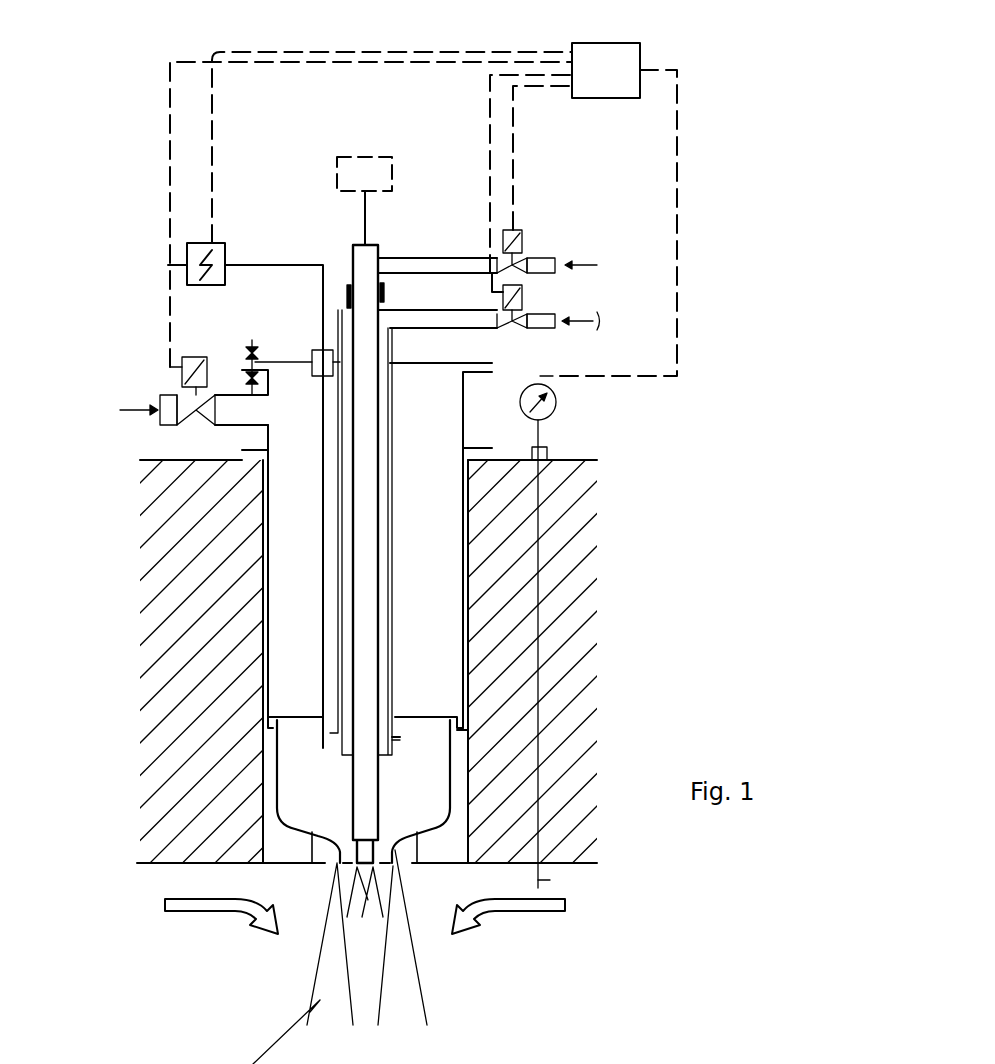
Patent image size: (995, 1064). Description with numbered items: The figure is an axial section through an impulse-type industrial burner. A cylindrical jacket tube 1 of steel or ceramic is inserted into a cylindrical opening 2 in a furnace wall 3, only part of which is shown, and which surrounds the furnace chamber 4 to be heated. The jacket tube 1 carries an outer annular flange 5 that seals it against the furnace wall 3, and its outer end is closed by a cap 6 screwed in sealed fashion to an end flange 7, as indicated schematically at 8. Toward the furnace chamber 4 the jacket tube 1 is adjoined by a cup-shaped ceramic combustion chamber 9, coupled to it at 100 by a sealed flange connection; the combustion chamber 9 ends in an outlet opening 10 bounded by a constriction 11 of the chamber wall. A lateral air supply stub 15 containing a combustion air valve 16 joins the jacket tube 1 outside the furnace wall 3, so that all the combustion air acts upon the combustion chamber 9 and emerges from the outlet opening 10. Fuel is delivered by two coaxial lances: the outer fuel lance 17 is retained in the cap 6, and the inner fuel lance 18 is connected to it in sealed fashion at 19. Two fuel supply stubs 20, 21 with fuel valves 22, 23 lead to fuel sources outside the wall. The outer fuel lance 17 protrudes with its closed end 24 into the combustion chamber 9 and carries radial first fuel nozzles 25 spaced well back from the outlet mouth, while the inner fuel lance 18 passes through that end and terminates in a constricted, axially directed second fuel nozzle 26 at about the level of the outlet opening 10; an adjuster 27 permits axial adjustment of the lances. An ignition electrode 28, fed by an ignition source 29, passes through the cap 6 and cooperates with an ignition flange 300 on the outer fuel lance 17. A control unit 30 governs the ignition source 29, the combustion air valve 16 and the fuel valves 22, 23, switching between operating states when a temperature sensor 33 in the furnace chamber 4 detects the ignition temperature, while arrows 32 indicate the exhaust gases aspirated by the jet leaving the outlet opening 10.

The jacket tube 1 is at (272, 617).
The cylindrical opening 2 is at (267, 843).
The furnace wall 3 is at (575, 650).
The furnace chamber 4 is at (485, 1004).
The outer annular flange 5 is at (477, 448).
The cap 6 is at (422, 365).
The end flange 7 is at (480, 377).
The screw connection 8 is at (248, 338).
The combustion chamber 9 is at (290, 817).
The outlet opening 10 is at (337, 867).
The constriction 11 is at (397, 850).
The air supply stub 15 is at (230, 408).
The combustion air valve 16 is at (180, 405).
The outer fuel lance 17 is at (392, 595).
The inner fuel lance 18 is at (375, 508).
The sealed connection 19 is at (385, 293).
The fuel supply stub 20 is at (460, 318).
The fuel supply stub 21 is at (430, 262).
The first fuel valve 22 is at (530, 298).
The second fuel valve 23 is at (525, 250).
The end of outer fuel lance 24 is at (387, 760).
The first fuel nozzles 25 is at (398, 740).
The second fuel nozzle 26 is at (365, 870).
The adjuster 27 is at (357, 167).
The ignition electrode 28 is at (322, 520).
The ignition source 29 is at (225, 248).
The control unit 30 is at (617, 60).
The arrows 32 is at (565, 925).
The temperature sensor 33 is at (550, 880).
The coupling 100 is at (460, 730).
The ignition flange 300 is at (400, 737).